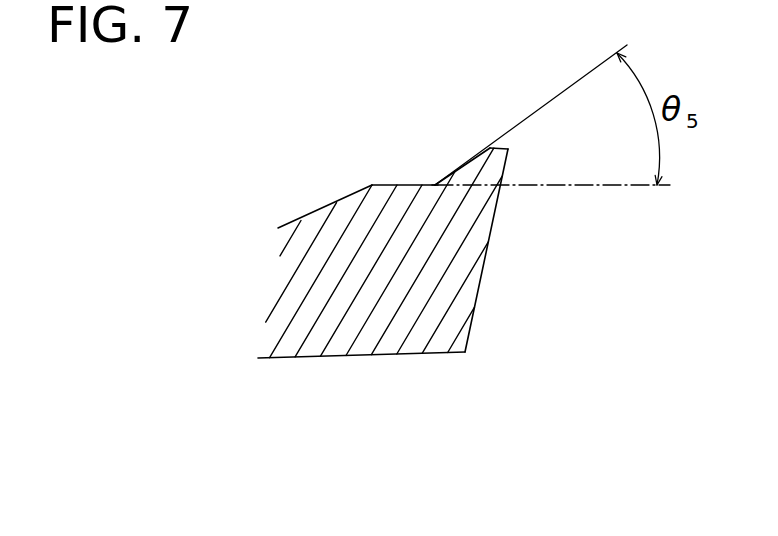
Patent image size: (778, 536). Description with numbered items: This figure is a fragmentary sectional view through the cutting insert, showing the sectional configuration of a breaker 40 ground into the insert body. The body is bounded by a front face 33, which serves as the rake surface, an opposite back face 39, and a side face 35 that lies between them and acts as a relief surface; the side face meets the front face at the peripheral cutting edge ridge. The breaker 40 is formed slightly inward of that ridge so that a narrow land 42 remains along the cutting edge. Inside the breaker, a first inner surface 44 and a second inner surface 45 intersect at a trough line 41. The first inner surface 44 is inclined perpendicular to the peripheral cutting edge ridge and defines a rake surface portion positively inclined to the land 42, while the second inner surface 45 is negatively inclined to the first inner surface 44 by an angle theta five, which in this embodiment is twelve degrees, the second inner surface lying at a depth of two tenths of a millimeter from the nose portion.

The front face 33 is at (306, 216).
The side face 35 is at (485, 273).
The back face 39 is at (380, 353).
The breaker 40 is at (345, 148).
The trough line 41 is at (435, 185).
The land 42 is at (490, 148).
The first inner surface 44 is at (463, 163).
The second inner surface 45 is at (393, 185).